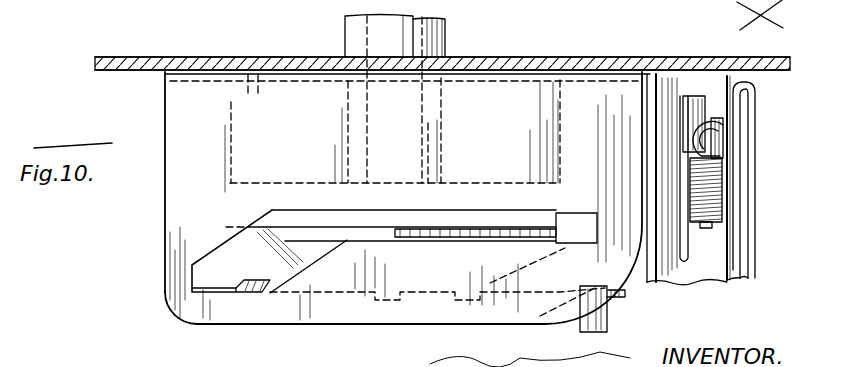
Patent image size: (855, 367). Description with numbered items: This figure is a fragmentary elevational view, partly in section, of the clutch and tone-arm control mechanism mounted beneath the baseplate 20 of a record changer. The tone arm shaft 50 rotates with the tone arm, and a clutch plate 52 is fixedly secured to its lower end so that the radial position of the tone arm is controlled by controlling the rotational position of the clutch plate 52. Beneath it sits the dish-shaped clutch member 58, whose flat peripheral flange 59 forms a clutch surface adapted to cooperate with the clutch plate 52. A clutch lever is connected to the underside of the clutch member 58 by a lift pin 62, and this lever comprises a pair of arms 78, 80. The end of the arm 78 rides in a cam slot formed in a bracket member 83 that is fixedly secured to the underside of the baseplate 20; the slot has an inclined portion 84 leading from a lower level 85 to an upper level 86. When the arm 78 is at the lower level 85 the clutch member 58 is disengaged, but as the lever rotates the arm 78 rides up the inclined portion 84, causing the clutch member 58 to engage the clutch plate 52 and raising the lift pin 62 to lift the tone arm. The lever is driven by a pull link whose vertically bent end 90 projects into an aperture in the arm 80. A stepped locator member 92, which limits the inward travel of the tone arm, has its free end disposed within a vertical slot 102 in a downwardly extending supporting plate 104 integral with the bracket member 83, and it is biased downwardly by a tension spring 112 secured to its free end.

The baseplate 20 is at (249, 56).
The tone arm shaft 50 is at (415, 117).
The clutch plate 52 is at (291, 183).
The clutch member 58 is at (503, 266).
The flat peripheral flange 59 is at (559, 218).
The lift pin 62 is at (408, 265).
The arm 78 is at (238, 292).
The arm 80 is at (527, 330).
The bracket member 83 is at (163, 224).
The inclined portion 84 is at (312, 262).
The lower level 85 is at (191, 323).
The upper level 86 is at (575, 240).
The bent end of pull link 90 is at (608, 316).
The stepped locator member 92 is at (714, 127).
The vertical slot 102 is at (680, 250).
The supporting plate 104 is at (712, 274).
The tension spring 112 is at (722, 187).